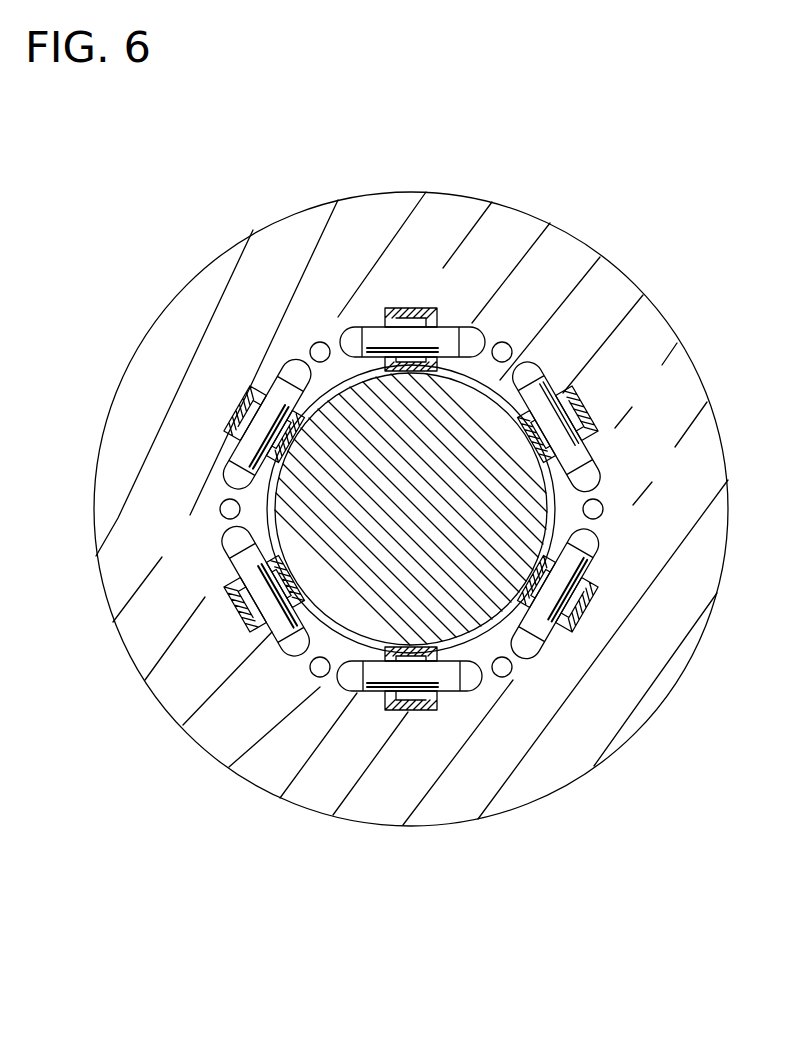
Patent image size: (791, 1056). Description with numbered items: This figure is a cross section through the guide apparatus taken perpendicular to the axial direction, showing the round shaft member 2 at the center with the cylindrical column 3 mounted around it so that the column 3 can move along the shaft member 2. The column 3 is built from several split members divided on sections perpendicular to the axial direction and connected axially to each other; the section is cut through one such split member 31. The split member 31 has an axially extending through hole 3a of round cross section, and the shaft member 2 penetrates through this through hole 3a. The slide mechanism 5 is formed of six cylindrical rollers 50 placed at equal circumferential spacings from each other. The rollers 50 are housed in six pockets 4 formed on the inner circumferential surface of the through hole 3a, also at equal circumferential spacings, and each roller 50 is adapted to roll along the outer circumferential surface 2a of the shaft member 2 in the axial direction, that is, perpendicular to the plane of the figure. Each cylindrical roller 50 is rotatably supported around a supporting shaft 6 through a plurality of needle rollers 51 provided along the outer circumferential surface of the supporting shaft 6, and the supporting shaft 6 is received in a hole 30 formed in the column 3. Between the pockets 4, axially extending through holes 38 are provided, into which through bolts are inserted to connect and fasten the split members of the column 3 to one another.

The shaft member 2 is at (423, 518).
The outer circumferential surface of the shaft member 2a is at (604, 510).
The column 3 is at (531, 192).
The through hole 3a is at (268, 513).
The split member 31 is at (317, 816).
The through hole 38 is at (320, 342).
The pocket 4 is at (413, 308).
The slide mechanism 5 is at (595, 439).
The cylindrical roller 50 is at (575, 397).
The needle roller 51 is at (595, 410).
The supporting shaft 6 is at (247, 575).
The hole 30 is at (482, 690).